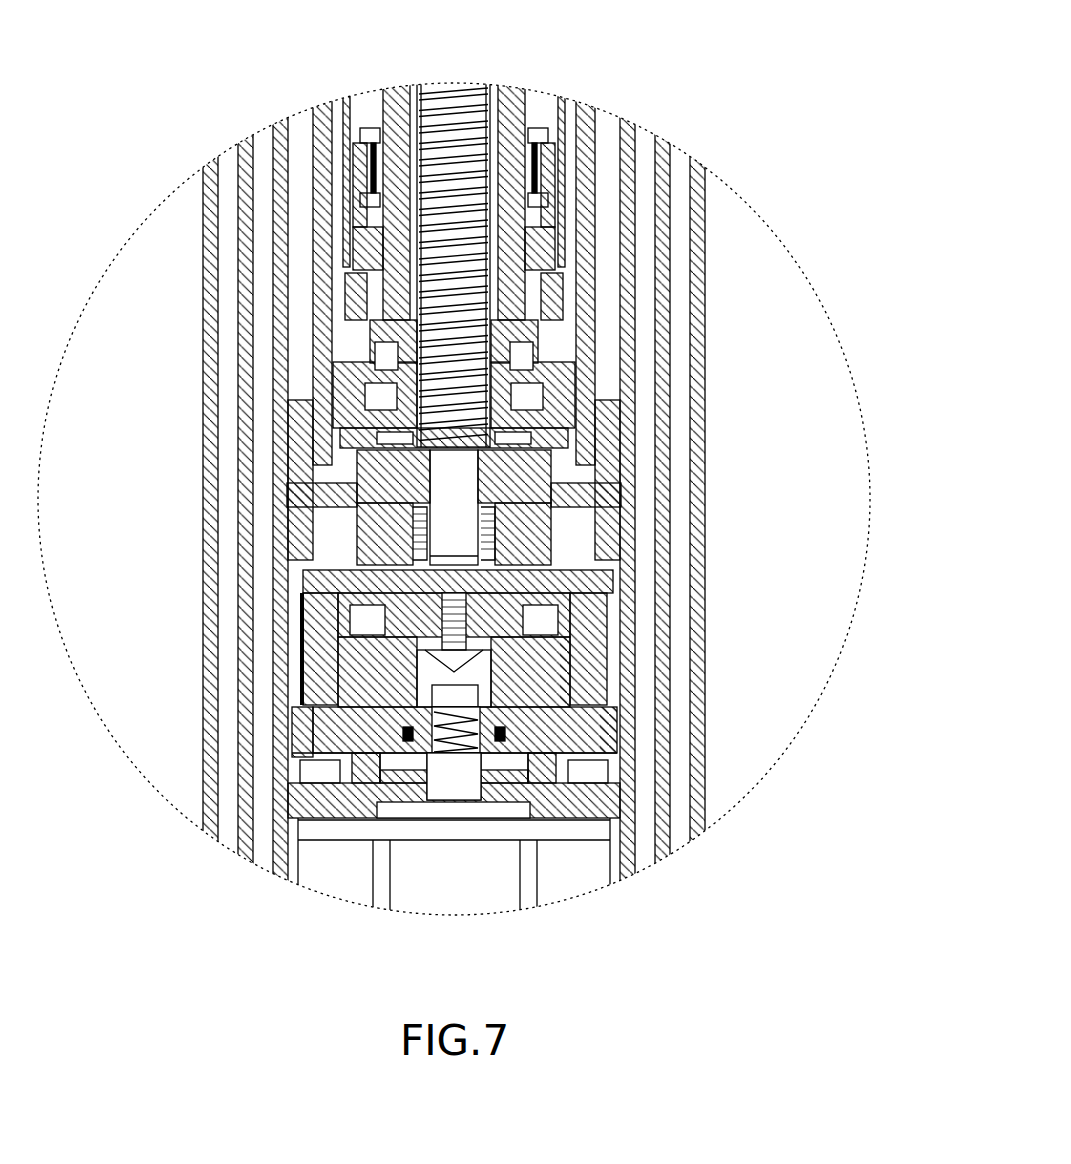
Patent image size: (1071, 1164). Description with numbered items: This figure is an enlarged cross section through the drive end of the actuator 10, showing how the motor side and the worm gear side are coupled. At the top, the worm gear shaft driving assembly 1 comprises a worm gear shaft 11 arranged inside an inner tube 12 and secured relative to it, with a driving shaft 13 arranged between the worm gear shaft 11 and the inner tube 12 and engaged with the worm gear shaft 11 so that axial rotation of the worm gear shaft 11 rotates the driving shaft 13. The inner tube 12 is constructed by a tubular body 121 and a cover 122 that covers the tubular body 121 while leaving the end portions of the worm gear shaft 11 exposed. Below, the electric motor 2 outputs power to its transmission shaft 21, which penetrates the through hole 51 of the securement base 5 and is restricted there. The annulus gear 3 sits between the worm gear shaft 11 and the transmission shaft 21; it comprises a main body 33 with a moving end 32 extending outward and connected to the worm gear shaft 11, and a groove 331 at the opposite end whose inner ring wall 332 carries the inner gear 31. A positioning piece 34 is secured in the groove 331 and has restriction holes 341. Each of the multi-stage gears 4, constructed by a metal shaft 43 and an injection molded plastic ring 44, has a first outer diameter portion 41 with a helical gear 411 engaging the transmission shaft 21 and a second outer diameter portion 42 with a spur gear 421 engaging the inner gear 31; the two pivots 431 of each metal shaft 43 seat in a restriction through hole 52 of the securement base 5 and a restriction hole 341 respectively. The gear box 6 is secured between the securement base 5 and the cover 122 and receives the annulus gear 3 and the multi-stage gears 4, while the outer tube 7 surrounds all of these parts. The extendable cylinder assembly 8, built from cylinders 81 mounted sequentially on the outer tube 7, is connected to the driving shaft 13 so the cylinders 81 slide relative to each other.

The worm gear shaft driving assembly 1 is at (612, 180).
The electric motor 2 is at (500, 895).
The annulus gear 3 is at (442, 578).
The multi-stage gears 4 is at (554, 747).
The securement base 5 is at (662, 842).
The gear box 6 is at (293, 618).
The outer tube 7 is at (282, 815).
The extendable cylinder assembly 8 is at (524, 582).
The actuator 10 is at (469, 34).
The worm gear shaft 11 is at (513, 188).
The inner tube 12 is at (626, 223).
The driving shaft 13 is at (527, 122).
The transmission shaft 21 is at (410, 690).
The inner gear 31 is at (333, 665).
The moving end 32 is at (545, 512).
The main body 33 is at (361, 660).
The positioning piece 34 is at (461, 563).
The first outer diameter portion 41 is at (541, 734).
The second outer diameter portion 42 is at (554, 665).
The metal shaft 43 is at (440, 495).
The plastic ring 44 is at (480, 762).
The through hole 51 is at (487, 790).
The restriction through holes 52 is at (560, 758).
The cylinders 81 is at (697, 802).
The tubular body 121 is at (545, 300).
The cover 122 is at (603, 412).
The groove 331 is at (313, 727).
The inner ring wall 332 is at (325, 640).
The restriction holes 341 is at (545, 618).
The helical gear 411 is at (620, 735).
The spur gear 421 is at (570, 647).
The pivots 431 is at (540, 615).